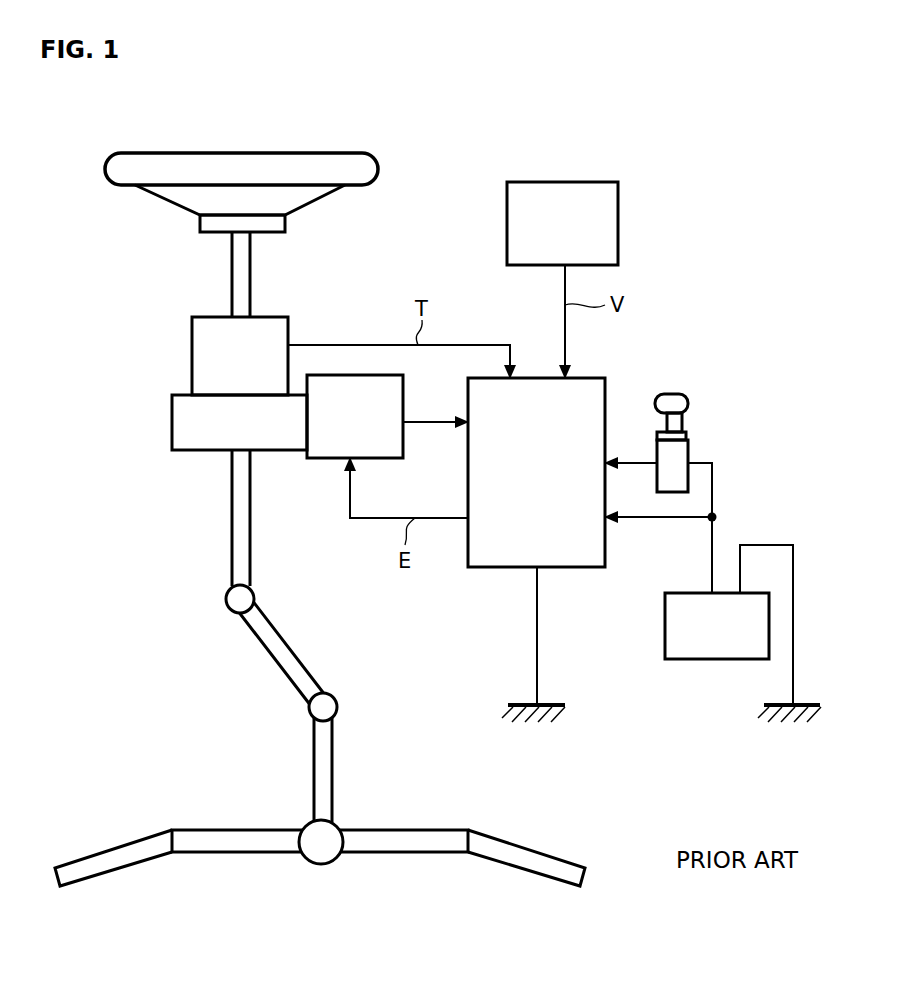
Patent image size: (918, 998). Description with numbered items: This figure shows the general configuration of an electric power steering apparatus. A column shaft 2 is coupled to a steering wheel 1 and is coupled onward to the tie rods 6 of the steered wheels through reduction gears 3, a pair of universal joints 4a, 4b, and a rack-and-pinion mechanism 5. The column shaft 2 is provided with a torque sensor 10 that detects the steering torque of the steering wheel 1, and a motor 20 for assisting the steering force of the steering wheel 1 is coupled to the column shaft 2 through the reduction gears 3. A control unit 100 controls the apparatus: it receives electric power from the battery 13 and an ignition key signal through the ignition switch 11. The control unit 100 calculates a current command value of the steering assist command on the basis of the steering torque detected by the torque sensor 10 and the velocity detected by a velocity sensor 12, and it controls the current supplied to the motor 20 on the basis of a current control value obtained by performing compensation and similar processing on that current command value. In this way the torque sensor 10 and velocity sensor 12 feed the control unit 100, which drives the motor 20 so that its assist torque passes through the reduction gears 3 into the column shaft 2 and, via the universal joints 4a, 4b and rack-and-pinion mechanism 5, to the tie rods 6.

The steering wheel 1 is at (378, 168).
The column shaft 2 is at (232, 278).
The torque sensor 10 is at (192, 347).
The reduction gears 3 is at (172, 424).
The motor 20 is at (403, 385).
The velocity sensor 12 is at (618, 195).
The control unit 100 is at (605, 385).
The ignition switch 11 is at (688, 400).
The battery 13 is at (665, 618).
The universal joint 4a is at (226, 606).
The universal joint 4b is at (309, 713).
The rack-and-pinion mechanism 5 is at (337, 822).
The tie rods 6 is at (500, 838).